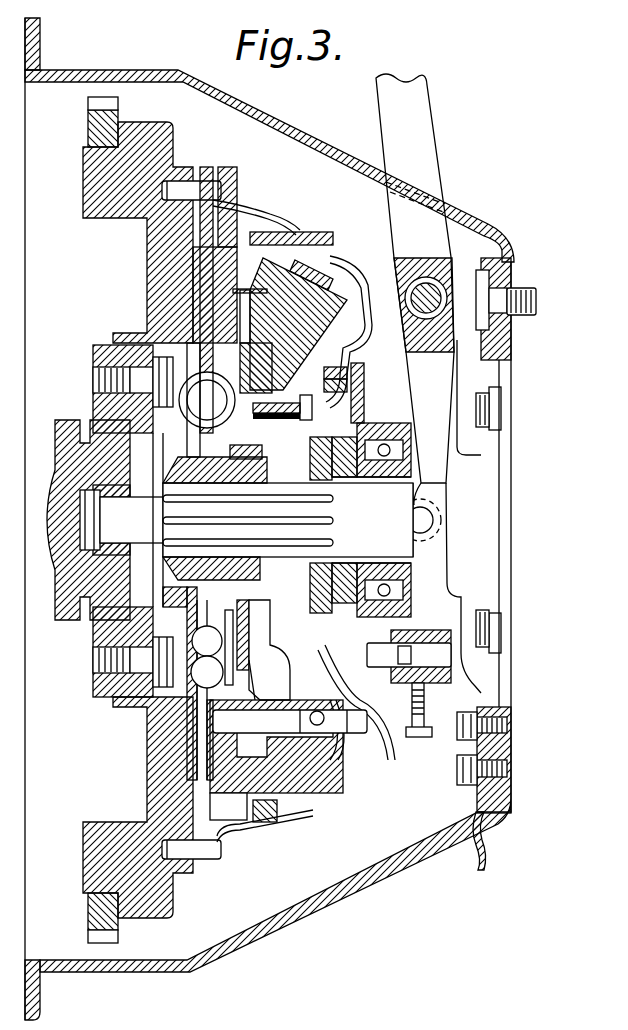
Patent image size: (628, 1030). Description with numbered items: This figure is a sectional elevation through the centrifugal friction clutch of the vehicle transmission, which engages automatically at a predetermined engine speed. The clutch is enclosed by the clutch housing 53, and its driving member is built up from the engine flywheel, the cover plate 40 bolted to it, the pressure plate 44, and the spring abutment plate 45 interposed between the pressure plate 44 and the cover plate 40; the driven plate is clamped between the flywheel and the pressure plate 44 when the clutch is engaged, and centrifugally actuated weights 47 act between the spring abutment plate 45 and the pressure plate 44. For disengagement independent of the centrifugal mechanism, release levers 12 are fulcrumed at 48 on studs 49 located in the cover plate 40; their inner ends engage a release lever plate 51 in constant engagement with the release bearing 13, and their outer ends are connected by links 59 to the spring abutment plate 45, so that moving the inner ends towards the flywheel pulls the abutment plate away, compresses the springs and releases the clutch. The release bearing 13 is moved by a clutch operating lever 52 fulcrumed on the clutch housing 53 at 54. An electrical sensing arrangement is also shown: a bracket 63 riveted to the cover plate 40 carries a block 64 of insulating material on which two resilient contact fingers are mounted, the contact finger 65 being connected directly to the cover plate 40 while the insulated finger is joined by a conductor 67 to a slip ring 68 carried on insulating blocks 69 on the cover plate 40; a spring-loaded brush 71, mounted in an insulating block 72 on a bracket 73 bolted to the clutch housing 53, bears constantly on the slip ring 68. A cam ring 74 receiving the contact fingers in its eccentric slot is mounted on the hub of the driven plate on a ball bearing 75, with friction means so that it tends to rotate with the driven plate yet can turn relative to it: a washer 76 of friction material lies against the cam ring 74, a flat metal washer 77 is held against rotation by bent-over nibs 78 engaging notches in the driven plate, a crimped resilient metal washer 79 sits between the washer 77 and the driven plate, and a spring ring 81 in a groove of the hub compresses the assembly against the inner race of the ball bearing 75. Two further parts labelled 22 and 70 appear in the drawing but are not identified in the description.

The clutch housing 53 is at (312, 134).
The housing bracket with bolts 70 is at (377, 762).
The clutch operating lever 52 is at (422, 125).
The fulcrum 54 is at (429, 315).
The insulating block 72 is at (442, 620).
The flywheel 22 is at (93, 183).
The pressure plate 44 is at (221, 245).
The studs 49 is at (197, 717).
The release lever plate 51 is at (330, 584).
The ball bearing 75 is at (192, 464).
The bent-over nibs 78 is at (203, 437).
The crimped resilient metal washer 79 is at (218, 592).
The flat metal washer 77 is at (213, 614).
The washer of friction material 76 is at (252, 602).
The cam ring 74 is at (249, 629).
The spring abutment plate 45 is at (252, 697).
The centrifugally actuated weights 47 is at (330, 312).
The cover plate 40 is at (248, 216).
The bracket 63 is at (335, 411).
The slip ring 68 is at (362, 371).
The conductor 67 is at (365, 390).
The contact finger 65 is at (255, 430).
The block of insulating material 64 is at (275, 406).
The spring ring 81 is at (262, 456).
The release bearing 13 is at (407, 600).
The spring-loaded brush 71 is at (414, 630).
The bracket 73 is at (474, 690).
The insulating blocks 69 is at (432, 718).
The release levers 12 is at (330, 788).
The fulcrum 48 is at (340, 735).
The links 59 is at (287, 800).